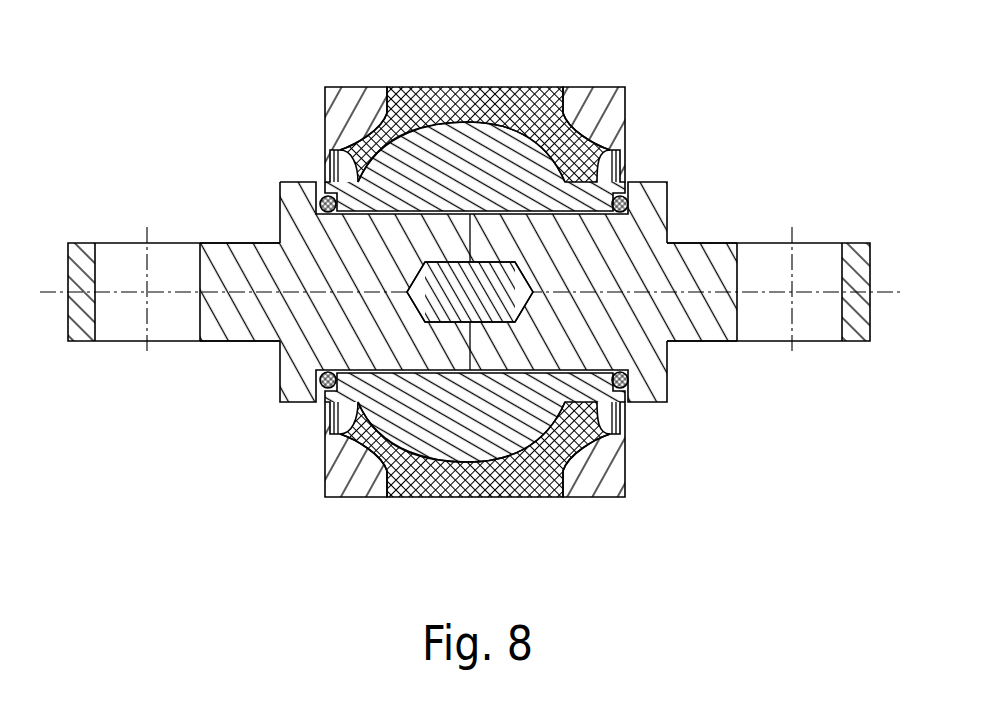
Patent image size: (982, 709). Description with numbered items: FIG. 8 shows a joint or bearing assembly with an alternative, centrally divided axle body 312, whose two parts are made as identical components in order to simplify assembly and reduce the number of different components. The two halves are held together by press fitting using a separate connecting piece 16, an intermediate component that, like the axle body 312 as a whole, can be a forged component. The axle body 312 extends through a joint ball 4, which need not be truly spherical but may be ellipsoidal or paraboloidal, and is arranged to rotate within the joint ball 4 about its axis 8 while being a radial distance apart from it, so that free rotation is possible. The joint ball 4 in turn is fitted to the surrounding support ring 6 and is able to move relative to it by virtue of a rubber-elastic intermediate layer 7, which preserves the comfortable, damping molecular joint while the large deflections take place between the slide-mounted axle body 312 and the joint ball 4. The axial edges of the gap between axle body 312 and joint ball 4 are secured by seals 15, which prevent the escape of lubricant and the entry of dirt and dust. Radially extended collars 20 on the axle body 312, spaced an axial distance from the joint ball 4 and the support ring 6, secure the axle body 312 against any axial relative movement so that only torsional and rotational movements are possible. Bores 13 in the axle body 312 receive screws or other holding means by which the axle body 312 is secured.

The joint ball 4 is at (540, 181).
The support ring 6 is at (597, 117).
The rubber-elastic intermediate layer 7 is at (365, 133).
The axis 8 is at (117, 292).
The bores 13 is at (147, 262).
The seals 15 is at (632, 205).
The connecting piece 16 is at (445, 302).
The collars 20 is at (248, 333).
The axle body 312 is at (653, 272).